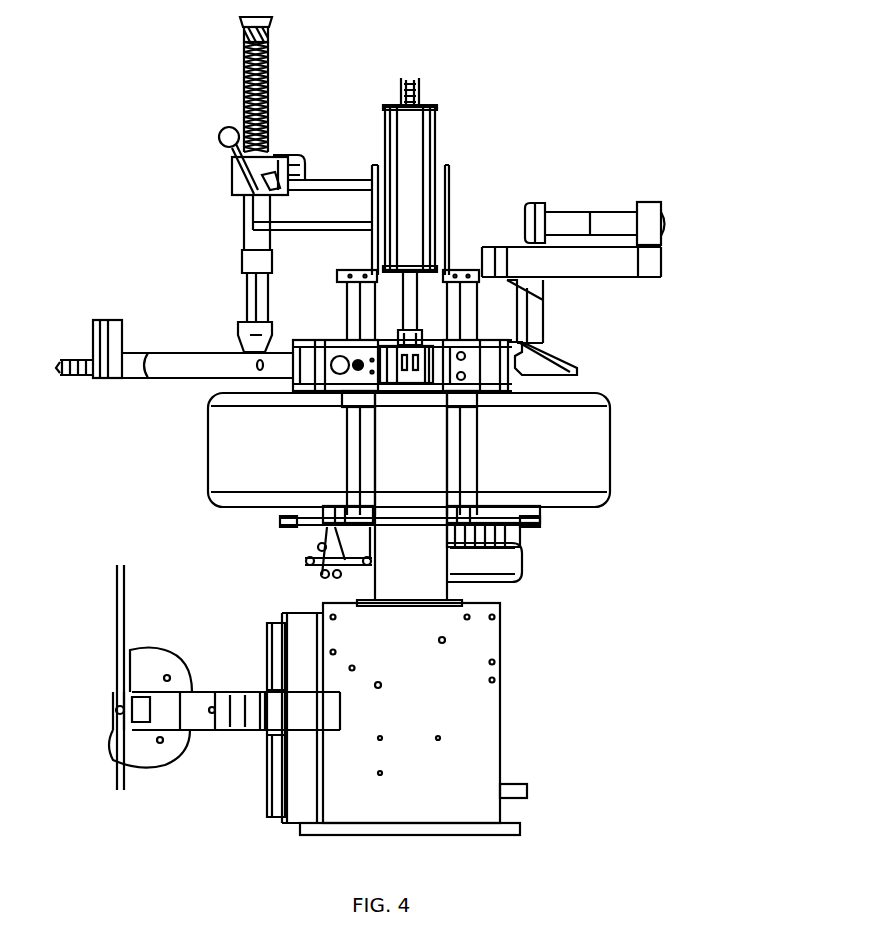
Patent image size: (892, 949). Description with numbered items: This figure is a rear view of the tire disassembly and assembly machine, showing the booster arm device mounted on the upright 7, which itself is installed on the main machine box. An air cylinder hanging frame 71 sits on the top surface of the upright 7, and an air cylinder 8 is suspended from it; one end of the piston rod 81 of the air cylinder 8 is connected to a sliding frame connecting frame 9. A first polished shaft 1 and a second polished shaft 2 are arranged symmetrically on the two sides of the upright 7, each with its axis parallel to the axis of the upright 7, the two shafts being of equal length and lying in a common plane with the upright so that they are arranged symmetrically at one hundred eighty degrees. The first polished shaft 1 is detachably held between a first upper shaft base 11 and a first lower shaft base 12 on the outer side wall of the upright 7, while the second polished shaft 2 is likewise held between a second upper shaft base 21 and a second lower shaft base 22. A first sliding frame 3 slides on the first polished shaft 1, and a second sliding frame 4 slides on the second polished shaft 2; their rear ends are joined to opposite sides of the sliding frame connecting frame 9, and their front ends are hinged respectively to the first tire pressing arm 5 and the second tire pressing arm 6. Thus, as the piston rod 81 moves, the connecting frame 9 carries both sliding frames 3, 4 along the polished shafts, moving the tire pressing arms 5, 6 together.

The first polished shaft 1 is at (470, 305).
The second polished shaft 2 is at (350, 417).
The first sliding frame 3 is at (470, 380).
The second sliding frame 4 is at (340, 362).
The first tire pressing arm 5 is at (655, 253).
The second tire pressing arm 6 is at (172, 362).
The upright 7 is at (405, 560).
The air cylinder 8 is at (413, 160).
The sliding frame connecting frame 9 is at (418, 387).
The first upper shaft base 11 is at (465, 273).
The first lower shaft base 12 is at (518, 575).
The second upper shaft base 21 is at (345, 272).
The second lower shaft base 22 is at (298, 525).
The air cylinder hanging frame 71 is at (417, 103).
The piston rod 81 is at (412, 300).